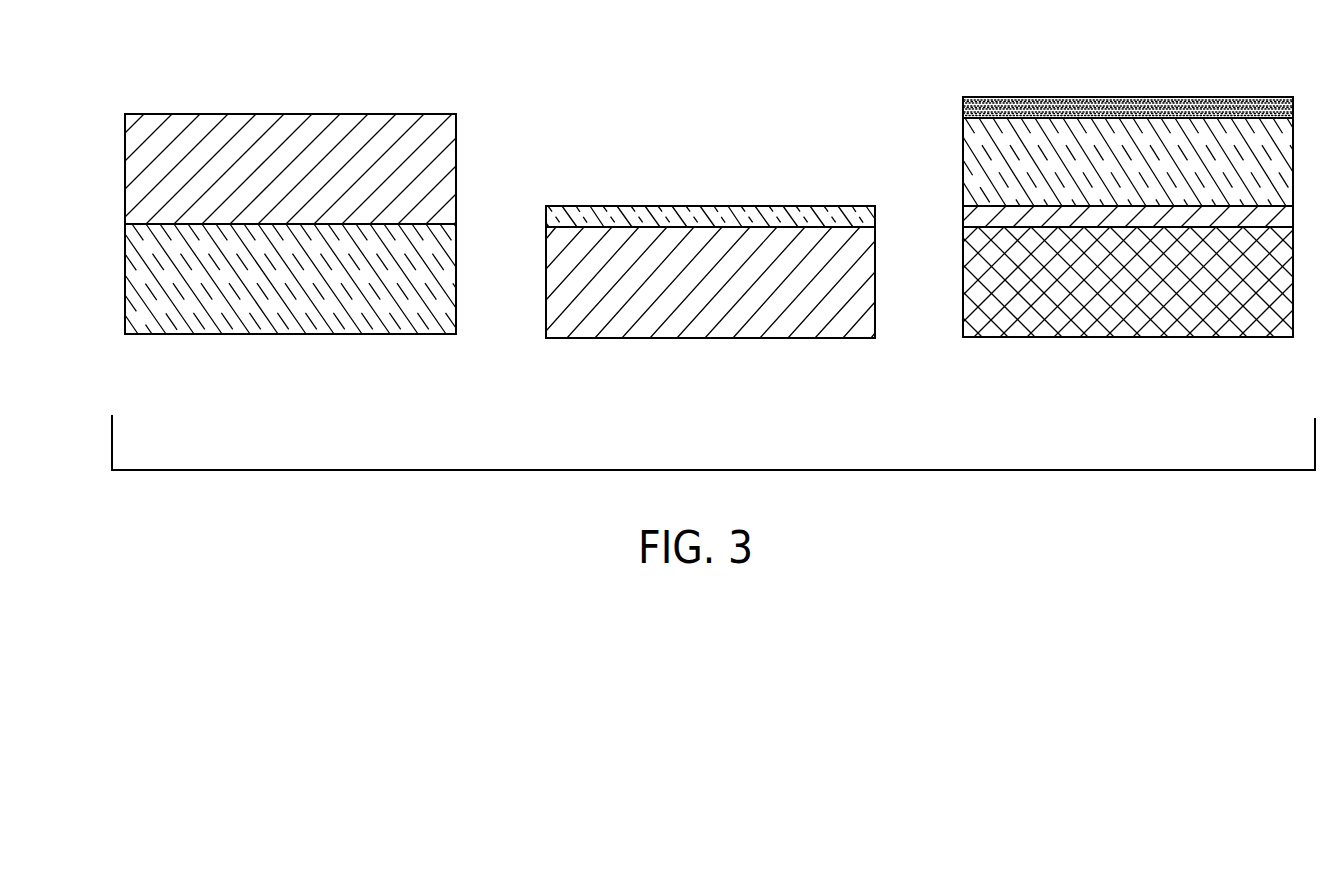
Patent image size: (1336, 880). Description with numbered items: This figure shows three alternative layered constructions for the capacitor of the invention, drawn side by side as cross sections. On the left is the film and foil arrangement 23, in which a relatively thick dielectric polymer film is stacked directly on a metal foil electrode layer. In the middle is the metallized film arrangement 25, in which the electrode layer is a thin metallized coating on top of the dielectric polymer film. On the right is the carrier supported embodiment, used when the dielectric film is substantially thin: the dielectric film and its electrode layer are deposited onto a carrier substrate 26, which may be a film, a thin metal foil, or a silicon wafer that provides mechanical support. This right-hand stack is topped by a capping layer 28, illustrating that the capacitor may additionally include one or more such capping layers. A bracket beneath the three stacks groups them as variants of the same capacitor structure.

The film and foil arrangement 23 is at (157, 85).
The metallized film arrangement 25 is at (629, 176).
The carrier substrate 26 is at (970, 299).
The capping layer 28 is at (968, 109).